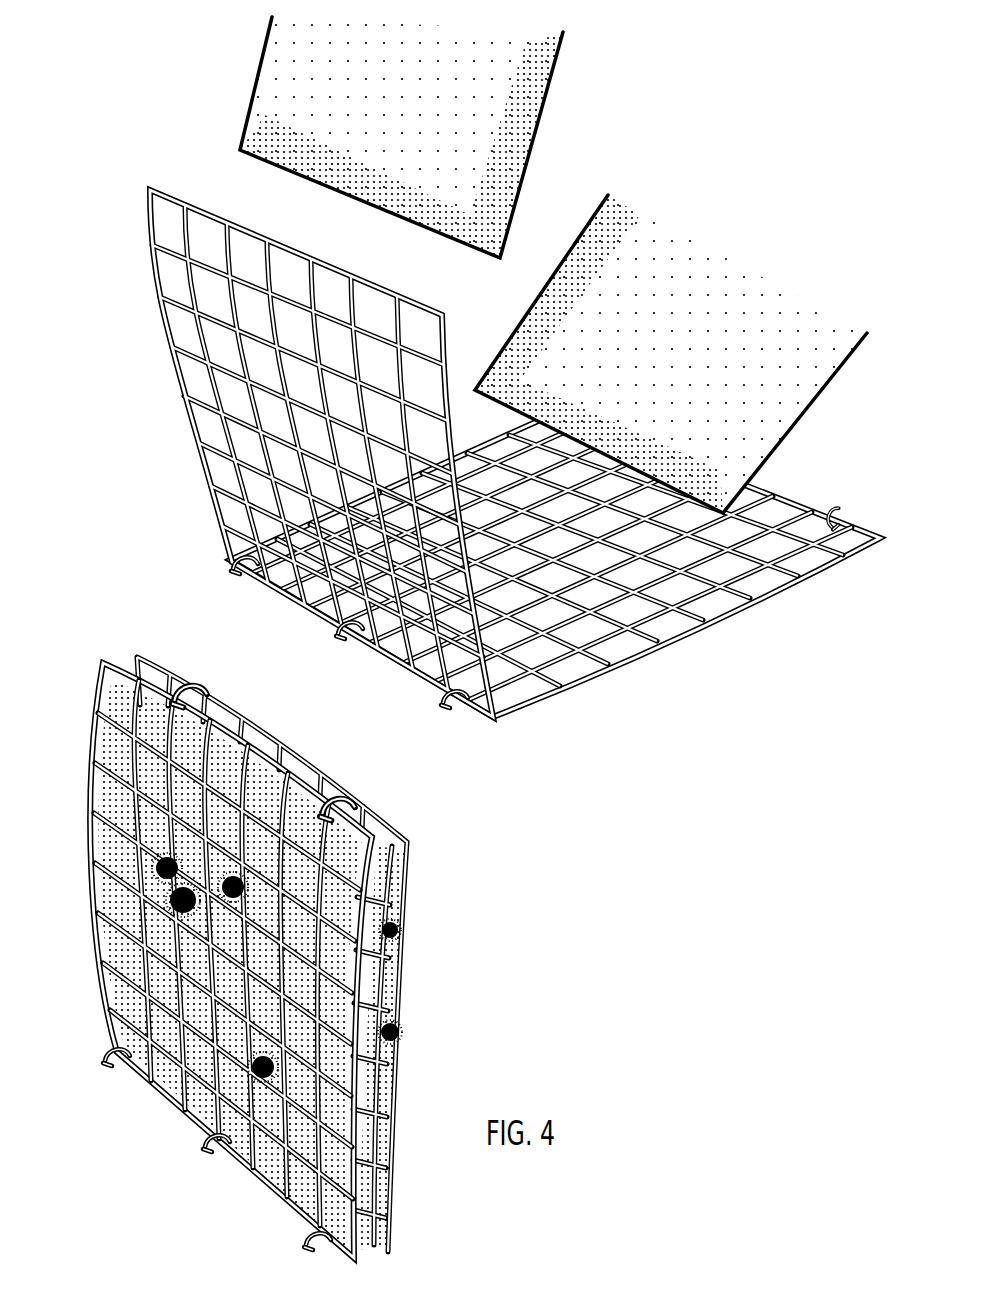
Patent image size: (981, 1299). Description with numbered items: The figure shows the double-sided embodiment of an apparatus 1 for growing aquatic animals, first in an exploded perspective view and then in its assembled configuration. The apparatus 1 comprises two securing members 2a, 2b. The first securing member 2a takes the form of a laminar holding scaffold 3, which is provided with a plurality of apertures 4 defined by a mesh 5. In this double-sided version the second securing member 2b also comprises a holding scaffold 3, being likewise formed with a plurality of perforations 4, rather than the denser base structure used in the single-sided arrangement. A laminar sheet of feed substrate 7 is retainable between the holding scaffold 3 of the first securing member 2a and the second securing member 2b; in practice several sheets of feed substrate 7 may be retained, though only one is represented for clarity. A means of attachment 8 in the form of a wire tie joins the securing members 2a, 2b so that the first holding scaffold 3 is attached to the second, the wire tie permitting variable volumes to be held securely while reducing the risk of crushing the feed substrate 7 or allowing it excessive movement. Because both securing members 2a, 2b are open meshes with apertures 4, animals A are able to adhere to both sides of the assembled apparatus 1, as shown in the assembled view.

In FIG. 3, the apparatus for growing aquatic animals 1 is at (490, 388).
In FIG. 3, the first securing member 2a is at (368, 453).
In FIG. 4, the first securing member 2a is at (269, 960).
In FIG. 3, the second securing member 2b is at (555, 564).
In FIG. 4, the second securing member 2b is at (407, 840).
In FIG. 3, the holding scaffold 3 is at (368, 453).
In FIG. 4, the holding scaffold 3 is at (269, 960).
In FIG. 3, the apertures 4 is at (201, 412).
In FIG. 4, the apertures 4 is at (300, 783).
In FIG. 3, the mesh 5 is at (713, 618).
In FIG. 4, the mesh 5 is at (385, 890).
In FIG. 3, the feed substrate 7 is at (600, 212).
In FIG. 4, the feed substrate 7 is at (118, 800).
In FIG. 3, the means of attachment 8 is at (446, 706).
In FIG. 4, the means of attachment 8 is at (180, 695).
In FIG. 4, the animals A is at (180, 905).